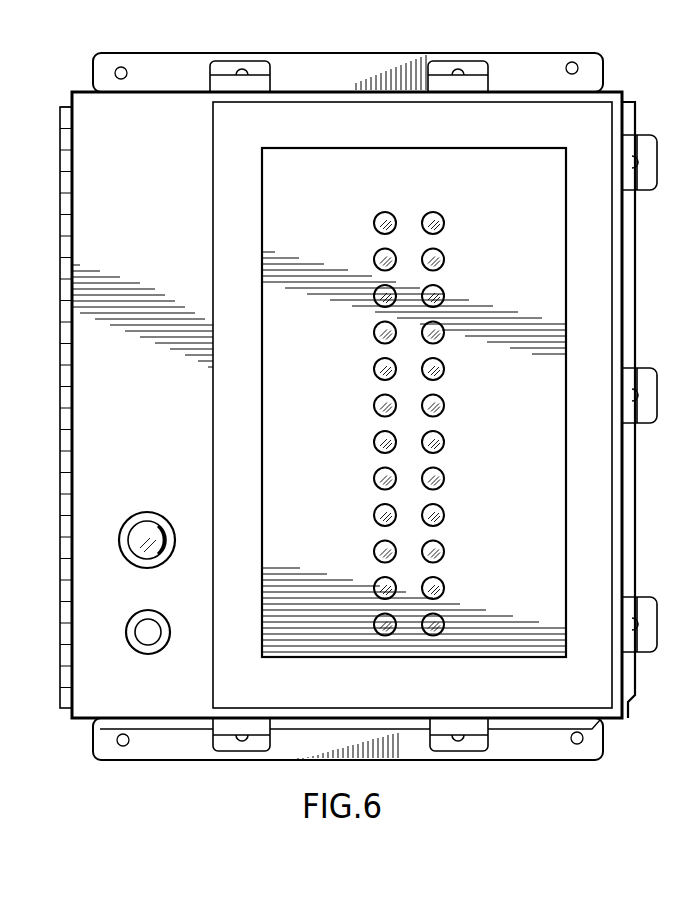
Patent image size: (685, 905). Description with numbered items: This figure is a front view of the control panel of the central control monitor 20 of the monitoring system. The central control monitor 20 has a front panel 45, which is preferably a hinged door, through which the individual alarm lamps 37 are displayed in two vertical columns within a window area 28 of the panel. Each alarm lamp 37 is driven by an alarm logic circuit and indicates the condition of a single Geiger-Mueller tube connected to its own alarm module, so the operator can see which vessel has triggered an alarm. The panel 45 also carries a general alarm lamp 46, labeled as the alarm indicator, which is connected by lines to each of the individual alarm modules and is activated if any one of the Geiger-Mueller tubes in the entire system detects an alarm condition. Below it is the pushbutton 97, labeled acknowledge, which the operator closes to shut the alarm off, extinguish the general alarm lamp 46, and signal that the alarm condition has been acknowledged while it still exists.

The central control monitor 20 is at (597, 237).
The front panel 45 is at (582, 118).
The display panel 28 is at (507, 490).
The alarm lamp 37 is at (441, 399).
The general alarm lamp 46 is at (150, 530).
The pushbutton 97 is at (137, 630).